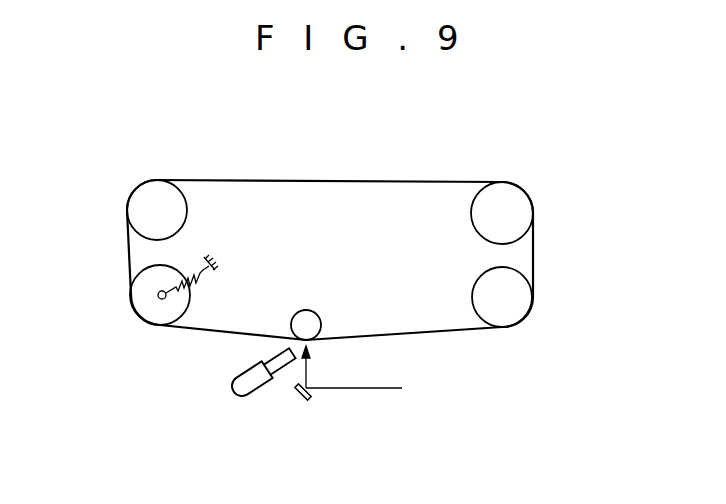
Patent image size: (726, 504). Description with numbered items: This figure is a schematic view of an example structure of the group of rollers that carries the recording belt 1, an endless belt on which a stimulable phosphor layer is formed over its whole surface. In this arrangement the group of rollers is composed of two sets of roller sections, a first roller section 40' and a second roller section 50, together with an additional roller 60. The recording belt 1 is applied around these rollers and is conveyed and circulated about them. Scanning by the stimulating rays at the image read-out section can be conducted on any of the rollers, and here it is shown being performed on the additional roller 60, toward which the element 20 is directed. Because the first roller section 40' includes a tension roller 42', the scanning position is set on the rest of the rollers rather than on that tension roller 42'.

The recording belt 1 is at (346, 181).
The first roller section 40' is at (122, 196).
The tension roller 42' is at (162, 313).
The second roller section 50 is at (548, 244).
The roller 60 is at (310, 324).
The light source 20 is at (278, 398).